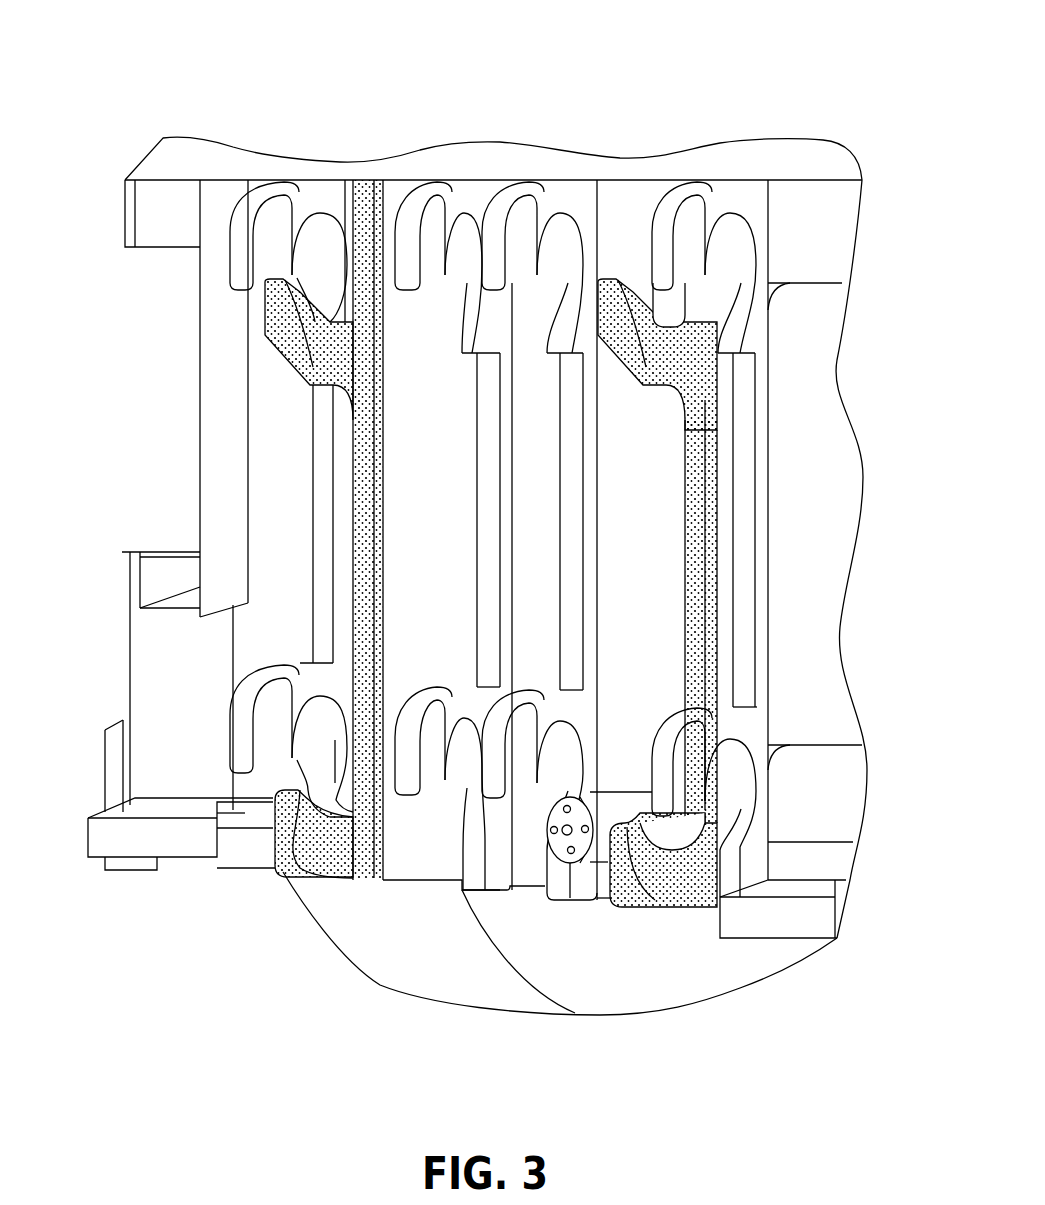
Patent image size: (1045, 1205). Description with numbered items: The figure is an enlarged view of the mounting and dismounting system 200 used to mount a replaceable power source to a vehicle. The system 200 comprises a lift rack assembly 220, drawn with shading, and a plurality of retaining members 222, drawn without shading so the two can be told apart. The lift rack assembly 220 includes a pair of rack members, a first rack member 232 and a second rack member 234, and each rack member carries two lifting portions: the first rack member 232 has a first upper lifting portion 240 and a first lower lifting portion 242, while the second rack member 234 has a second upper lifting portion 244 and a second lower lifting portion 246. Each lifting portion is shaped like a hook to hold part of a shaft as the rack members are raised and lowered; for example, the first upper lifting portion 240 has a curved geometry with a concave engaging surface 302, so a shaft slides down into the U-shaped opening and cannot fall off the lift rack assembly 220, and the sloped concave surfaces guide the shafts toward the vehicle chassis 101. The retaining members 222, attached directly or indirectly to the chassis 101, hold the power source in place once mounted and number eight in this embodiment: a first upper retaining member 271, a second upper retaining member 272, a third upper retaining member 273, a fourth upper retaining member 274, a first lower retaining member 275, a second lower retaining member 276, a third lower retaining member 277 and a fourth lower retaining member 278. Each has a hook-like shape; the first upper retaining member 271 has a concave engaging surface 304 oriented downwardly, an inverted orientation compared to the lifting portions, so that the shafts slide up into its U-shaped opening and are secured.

The vehicle chassis 101 is at (218, 413).
The mounting and dismounting system 200 is at (280, 988).
The lift rack assembly 220 is at (708, 452).
The retaining members 222 is at (738, 194).
The first rack member 232 is at (360, 487).
The second rack member 234 is at (712, 563).
The first upper lifting portion 240 is at (297, 312).
The first lower lifting portion 242 is at (283, 853).
The second upper lifting portion 244 is at (640, 305).
The second lower lifting portion 246 is at (680, 915).
The first upper retaining member 271 is at (291, 204).
The second upper retaining member 272 is at (455, 200).
The third upper retaining member 273 is at (540, 203).
The fourth upper retaining member 274 is at (713, 203).
The first lower retaining member 275 is at (296, 695).
The second lower retaining member 276 is at (450, 705).
The third lower retaining member 277 is at (537, 710).
The fourth lower retaining member 278 is at (690, 740).
The concave engaging surface 302 is at (335, 245).
The concave engaging surface 304 is at (297, 258).